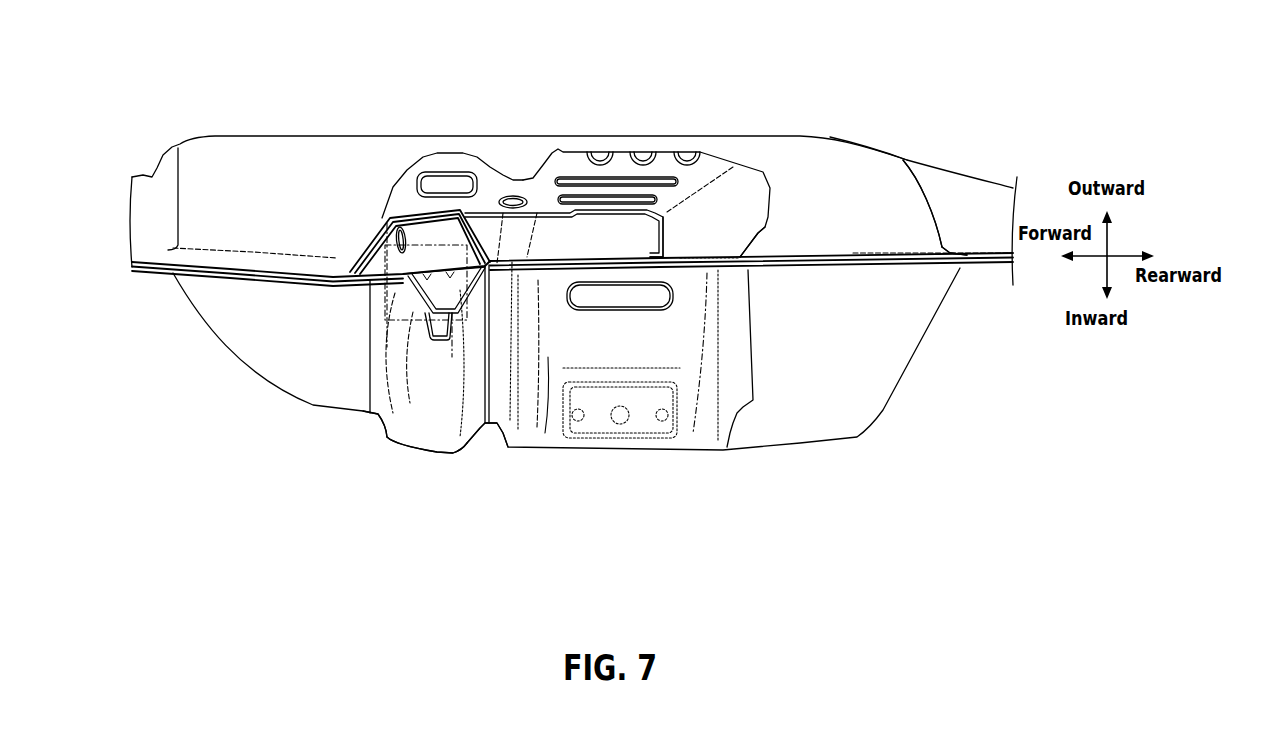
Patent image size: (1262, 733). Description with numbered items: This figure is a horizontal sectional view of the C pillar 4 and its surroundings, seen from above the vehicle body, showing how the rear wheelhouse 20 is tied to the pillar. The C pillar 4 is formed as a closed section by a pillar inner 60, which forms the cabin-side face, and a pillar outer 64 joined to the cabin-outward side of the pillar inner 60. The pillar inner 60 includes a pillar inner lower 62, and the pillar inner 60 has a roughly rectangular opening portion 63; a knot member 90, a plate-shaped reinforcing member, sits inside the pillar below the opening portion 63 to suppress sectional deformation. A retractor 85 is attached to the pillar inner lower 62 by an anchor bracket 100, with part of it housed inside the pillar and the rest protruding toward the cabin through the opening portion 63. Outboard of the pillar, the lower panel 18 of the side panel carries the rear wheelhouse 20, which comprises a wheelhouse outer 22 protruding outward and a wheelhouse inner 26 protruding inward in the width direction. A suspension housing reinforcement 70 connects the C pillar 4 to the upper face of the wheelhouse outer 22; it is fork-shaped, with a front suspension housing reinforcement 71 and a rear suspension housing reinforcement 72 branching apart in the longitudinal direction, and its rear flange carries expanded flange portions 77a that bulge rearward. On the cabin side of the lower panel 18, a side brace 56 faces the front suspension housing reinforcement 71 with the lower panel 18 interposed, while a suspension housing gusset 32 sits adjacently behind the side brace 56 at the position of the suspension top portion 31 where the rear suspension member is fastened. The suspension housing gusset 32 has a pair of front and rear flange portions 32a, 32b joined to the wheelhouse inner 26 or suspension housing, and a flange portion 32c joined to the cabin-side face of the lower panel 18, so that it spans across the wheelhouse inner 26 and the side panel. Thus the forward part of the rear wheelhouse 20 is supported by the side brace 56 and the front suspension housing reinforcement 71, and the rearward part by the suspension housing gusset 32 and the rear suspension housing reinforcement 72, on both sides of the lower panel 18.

The C pillar 4 is at (548, 304).
The lower panel 18 is at (793, 257).
The rear wheelhouse 20 is at (965, 100).
The wheelhouse outer 22 is at (877, 168).
The wheelhouse inner 26 is at (860, 292).
The suspension top portion 31 is at (643, 440).
The suspension housing gusset 32 is at (639, 362).
The front flange portion 32a is at (503, 412).
The rear flange portion 32b is at (742, 410).
The flange portion 32c is at (687, 262).
The side brace 56 is at (430, 432).
The pillar inner 60 is at (327, 292).
The pillar inner lower 62 is at (350, 274).
The opening portion 63 is at (440, 295).
The pillar outer 64 is at (345, 257).
The suspension housing reinforcement 70 is at (576, 142).
The front suspension housing reinforcement 71 is at (471, 139).
The rear suspension housing reinforcement 72 is at (571, 160).
The expanded flange portion 77a is at (717, 257).
The retractor 85 is at (447, 170).
The knot member 90 is at (377, 248).
The anchor bracket 100 is at (385, 418).